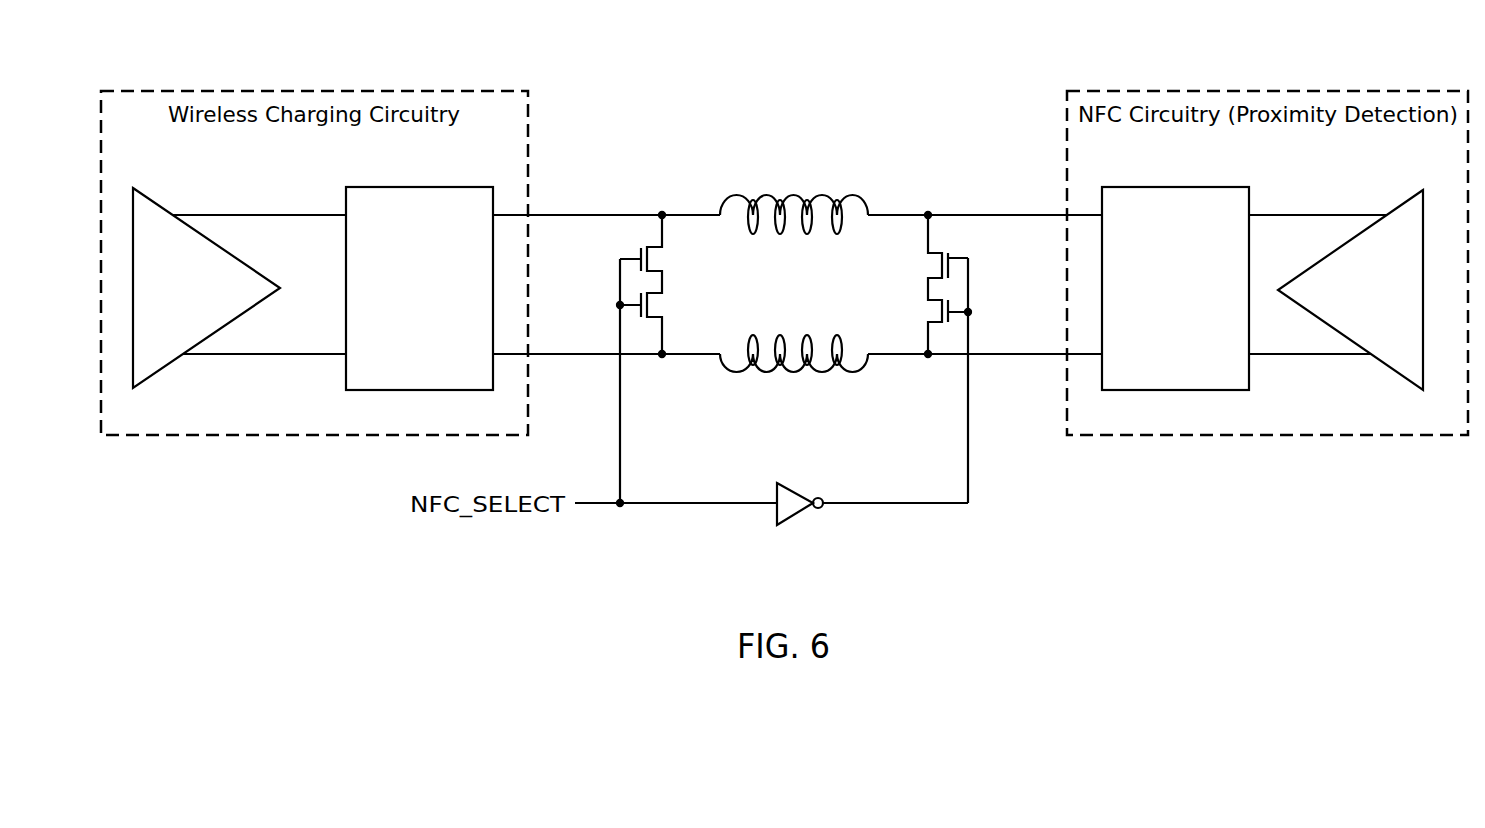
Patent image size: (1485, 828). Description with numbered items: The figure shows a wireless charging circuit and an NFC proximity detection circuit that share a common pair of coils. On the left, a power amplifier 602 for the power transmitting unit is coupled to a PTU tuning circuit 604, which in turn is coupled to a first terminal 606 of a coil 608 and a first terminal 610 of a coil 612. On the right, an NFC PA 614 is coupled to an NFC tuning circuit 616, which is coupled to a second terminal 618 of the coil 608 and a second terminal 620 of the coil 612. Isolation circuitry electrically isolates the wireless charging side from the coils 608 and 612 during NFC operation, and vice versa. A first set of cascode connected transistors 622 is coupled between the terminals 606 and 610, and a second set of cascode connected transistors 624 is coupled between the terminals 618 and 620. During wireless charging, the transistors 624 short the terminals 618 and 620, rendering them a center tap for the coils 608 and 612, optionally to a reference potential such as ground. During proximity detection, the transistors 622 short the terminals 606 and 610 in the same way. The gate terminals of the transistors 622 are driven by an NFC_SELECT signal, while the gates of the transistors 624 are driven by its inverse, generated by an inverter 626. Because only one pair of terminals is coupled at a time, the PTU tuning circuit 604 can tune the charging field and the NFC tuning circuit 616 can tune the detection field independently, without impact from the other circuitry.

The power amplifier for the PTU 602 is at (155, 198).
The PTU tuning circuit 604 is at (422, 187).
The first terminal of coil 606 is at (678, 213).
The coil 608 is at (795, 195).
The first terminal of coil 610 is at (678, 352).
The coil 612 is at (807, 337).
The NFC PA 614 is at (1403, 202).
The NFC tuning circuit 616 is at (1178, 187).
The second terminal of coil 618 is at (930, 213).
The second terminal of coil 620 is at (928, 358).
The first set of cascode connected transistors 622 is at (603, 281).
The second set of cascode connected transistors 624 is at (989, 284).
The inverter 626 is at (790, 517).